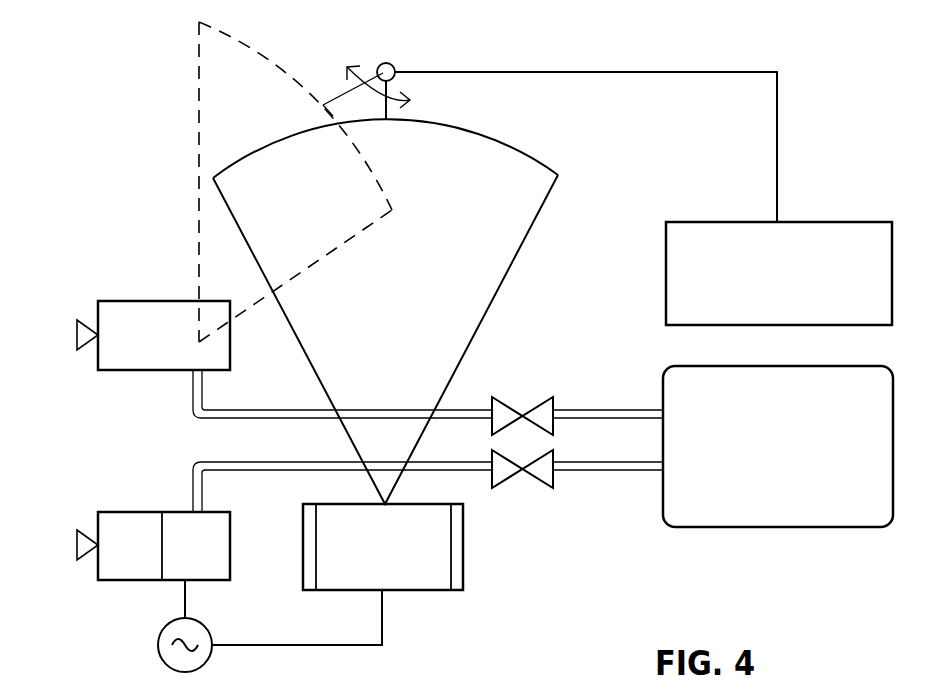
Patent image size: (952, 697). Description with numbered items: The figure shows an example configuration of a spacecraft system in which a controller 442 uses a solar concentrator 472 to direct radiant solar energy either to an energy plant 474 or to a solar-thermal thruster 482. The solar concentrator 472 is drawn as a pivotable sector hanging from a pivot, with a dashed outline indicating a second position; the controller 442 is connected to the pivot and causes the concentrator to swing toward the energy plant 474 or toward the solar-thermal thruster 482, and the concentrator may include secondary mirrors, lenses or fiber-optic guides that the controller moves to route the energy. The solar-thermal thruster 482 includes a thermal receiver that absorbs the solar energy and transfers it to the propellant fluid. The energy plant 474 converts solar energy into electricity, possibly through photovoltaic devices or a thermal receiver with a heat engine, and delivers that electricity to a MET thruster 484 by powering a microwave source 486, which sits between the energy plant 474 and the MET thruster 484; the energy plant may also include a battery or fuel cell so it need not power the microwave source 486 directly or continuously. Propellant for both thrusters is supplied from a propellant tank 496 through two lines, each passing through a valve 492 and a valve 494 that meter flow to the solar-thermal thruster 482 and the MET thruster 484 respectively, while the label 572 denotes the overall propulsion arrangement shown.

The solar concentrator 472 is at (527, 155).
The controller 442 is at (820, 222).
The solar-thermal thruster 482 is at (112, 301).
The MET thruster 484 is at (108, 512).
The microwave source 486 is at (163, 658).
The energy plant 474 is at (415, 590).
The first valve 492 is at (528, 410).
The second valve 494 is at (535, 478).
The propellant tank 496 is at (823, 527).
The propulsion system 572 is at (466, 696).